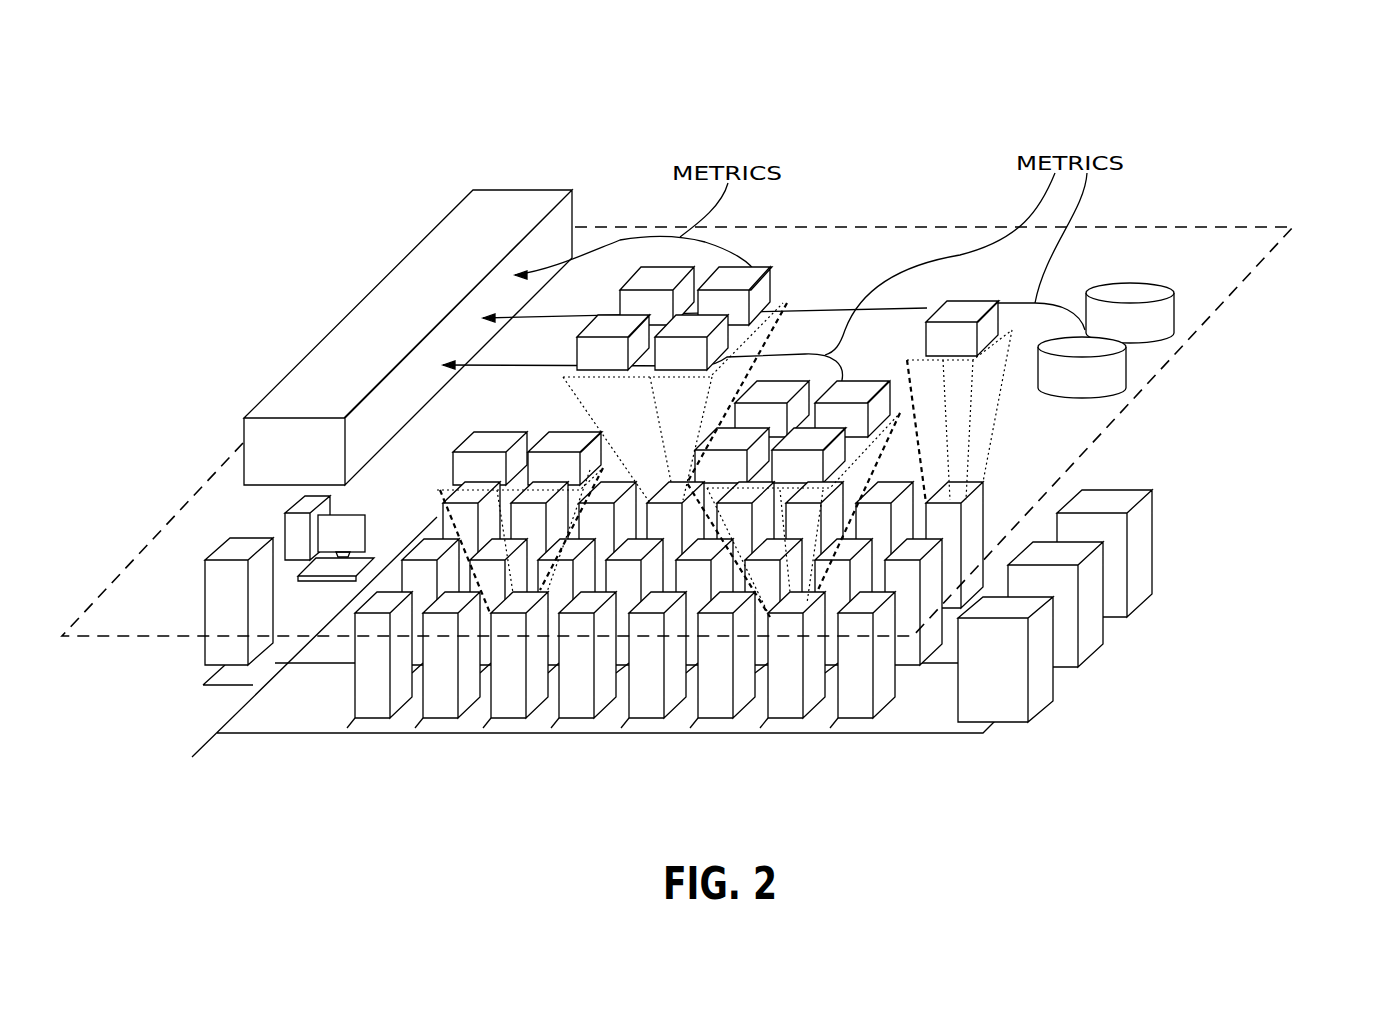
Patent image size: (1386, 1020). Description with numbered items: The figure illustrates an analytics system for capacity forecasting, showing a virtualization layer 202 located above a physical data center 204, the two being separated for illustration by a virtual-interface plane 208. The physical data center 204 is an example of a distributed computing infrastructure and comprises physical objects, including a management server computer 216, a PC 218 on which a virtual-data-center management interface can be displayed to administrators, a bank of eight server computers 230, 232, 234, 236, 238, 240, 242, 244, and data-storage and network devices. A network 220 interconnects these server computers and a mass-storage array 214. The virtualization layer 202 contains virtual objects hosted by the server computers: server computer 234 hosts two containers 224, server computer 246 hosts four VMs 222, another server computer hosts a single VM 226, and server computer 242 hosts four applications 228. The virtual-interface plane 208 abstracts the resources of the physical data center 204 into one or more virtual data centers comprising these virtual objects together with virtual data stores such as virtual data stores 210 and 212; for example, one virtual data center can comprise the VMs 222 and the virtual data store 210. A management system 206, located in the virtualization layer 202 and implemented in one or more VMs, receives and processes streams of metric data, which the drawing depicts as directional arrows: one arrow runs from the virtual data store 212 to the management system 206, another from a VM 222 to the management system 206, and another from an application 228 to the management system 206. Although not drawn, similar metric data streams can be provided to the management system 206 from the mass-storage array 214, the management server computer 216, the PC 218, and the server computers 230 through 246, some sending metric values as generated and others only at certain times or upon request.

The virtualization layer 202 is at (913, 128).
The physical data center 204 is at (745, 768).
The management system 206 is at (306, 355).
The virtual-interface plane 208 is at (1243, 277).
The virtual data store 210 is at (1176, 323).
The virtual data store 212 is at (1127, 384).
The mass-storage array 214 is at (1045, 700).
The management server computer 216 is at (203, 655).
The PC 218 is at (340, 513).
The network 220 is at (257, 733).
The VMs 222 is at (755, 272).
The containers 224 is at (510, 440).
The VM 226 is at (960, 314).
The applications 228 is at (847, 397).
The server computer 230 is at (372, 707).
The server computer 232 is at (440, 707).
The server computer 234 is at (508, 707).
The server computer 236 is at (576, 707).
The server computer 238 is at (646, 707).
The server computer 240 is at (715, 707).
The server computer 242 is at (785, 707).
The server computer 244 is at (855, 707).
The server computer 246 is at (680, 498).